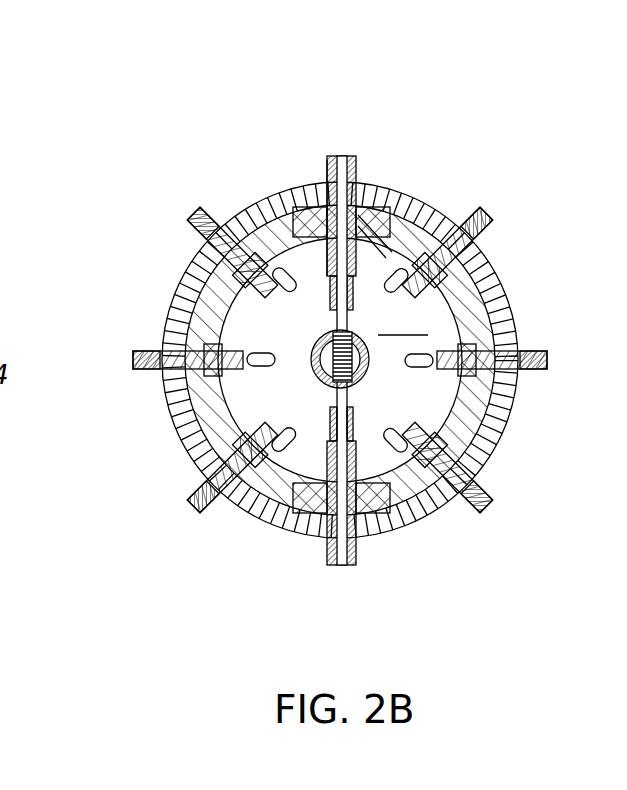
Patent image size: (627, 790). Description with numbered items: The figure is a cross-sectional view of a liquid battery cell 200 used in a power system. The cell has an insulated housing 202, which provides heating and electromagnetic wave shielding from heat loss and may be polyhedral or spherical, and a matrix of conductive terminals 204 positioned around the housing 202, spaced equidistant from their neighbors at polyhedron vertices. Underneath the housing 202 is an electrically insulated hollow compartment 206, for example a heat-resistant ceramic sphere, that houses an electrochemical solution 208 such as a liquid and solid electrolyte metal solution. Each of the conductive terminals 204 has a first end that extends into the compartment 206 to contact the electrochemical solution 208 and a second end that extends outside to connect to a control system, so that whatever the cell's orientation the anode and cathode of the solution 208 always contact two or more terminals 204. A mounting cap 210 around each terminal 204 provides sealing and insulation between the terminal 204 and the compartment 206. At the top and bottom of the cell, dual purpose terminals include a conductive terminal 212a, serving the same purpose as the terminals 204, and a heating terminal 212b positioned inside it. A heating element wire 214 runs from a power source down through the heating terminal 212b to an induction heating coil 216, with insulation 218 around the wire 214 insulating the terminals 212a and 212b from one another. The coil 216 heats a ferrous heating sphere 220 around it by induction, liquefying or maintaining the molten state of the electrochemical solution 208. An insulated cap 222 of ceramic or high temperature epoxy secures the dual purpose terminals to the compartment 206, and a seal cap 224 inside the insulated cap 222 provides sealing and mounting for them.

The liquid battery cell 200 is at (150, 76).
The insulated housing 202 is at (512, 318).
The conductive terminals 204 is at (192, 225).
The electrically insulated hollow compartment 206 is at (415, 203).
The electrochemical solution 208 is at (403, 321).
The mounting cap 210 is at (240, 247).
The conductive terminal 212a is at (352, 158).
The heating terminal 212b is at (334, 156).
The heating element wire 214 is at (338, 327).
The induction heating coil 216 is at (240, 450).
The insulation 218 is at (353, 432).
The heating sphere 220 is at (313, 345).
The insulated cap 222 is at (372, 215).
The seal cap 224 is at (326, 185).